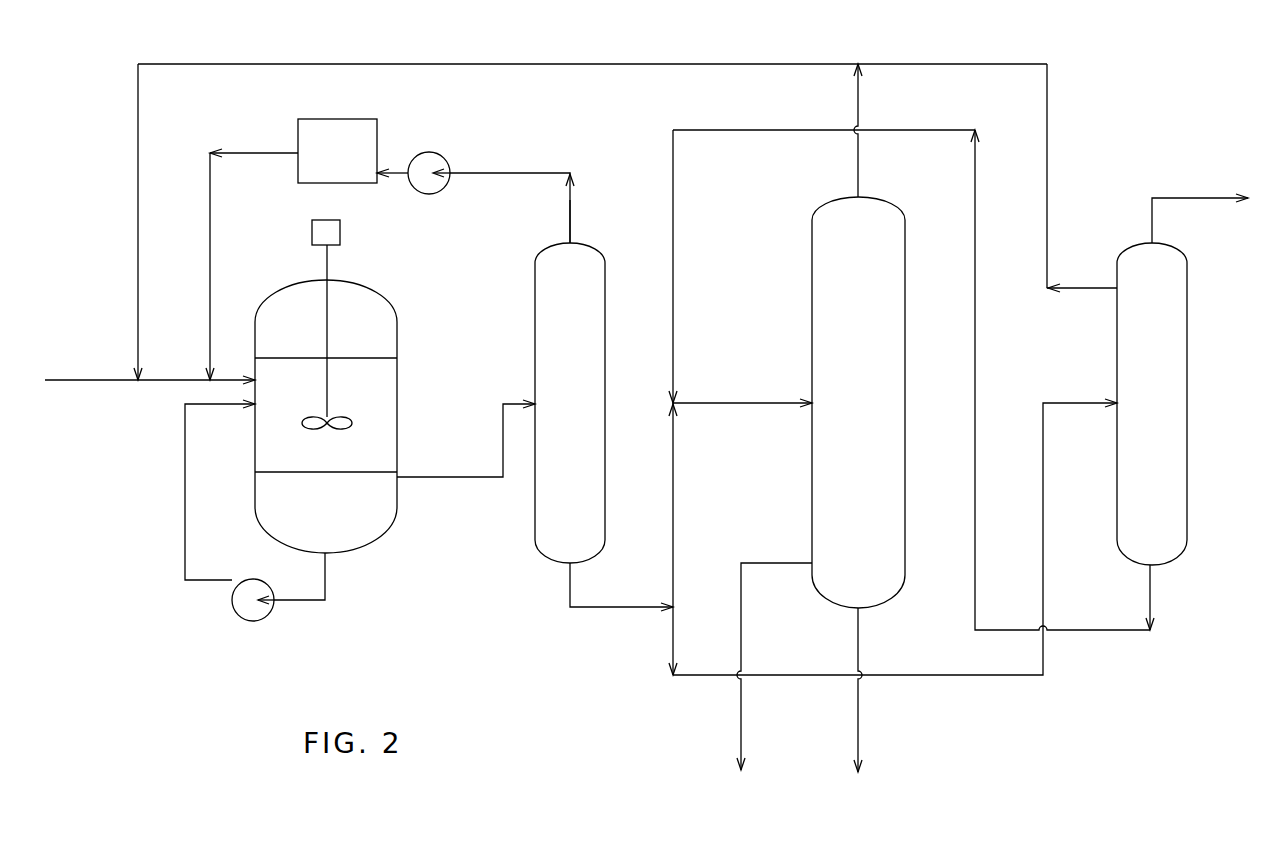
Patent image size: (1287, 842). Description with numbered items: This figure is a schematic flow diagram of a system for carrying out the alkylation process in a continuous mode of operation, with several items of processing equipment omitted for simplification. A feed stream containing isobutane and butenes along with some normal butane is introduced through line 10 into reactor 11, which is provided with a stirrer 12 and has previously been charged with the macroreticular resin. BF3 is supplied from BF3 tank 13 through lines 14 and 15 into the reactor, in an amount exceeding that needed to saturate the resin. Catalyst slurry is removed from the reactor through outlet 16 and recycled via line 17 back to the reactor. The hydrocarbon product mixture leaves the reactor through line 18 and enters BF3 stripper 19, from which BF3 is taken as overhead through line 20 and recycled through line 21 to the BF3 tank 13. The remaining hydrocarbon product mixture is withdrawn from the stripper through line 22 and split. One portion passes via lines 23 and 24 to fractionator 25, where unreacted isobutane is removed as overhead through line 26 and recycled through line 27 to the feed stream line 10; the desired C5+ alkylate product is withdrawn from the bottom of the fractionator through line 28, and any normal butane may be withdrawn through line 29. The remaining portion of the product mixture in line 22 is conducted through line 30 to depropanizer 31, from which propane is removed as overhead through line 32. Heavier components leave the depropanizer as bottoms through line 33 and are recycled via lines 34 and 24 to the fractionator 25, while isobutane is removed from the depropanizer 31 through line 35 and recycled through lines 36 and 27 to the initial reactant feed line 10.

The line 10 is at (120, 386).
The reactor 11 is at (397, 310).
The stirrer 12 is at (330, 257).
The BF3 tank 13 is at (377, 122).
The line 14 is at (250, 150).
The line 15 is at (210, 268).
The outlet 16 is at (325, 580).
The line 17 is at (185, 550).
The line 18 is at (447, 490).
The BF3 stripper 19 is at (605, 335).
The line 20 is at (570, 210).
The line 21 is at (535, 173).
The line 22 is at (568, 583).
The line 23 is at (673, 505).
The line 24 is at (735, 410).
The fractionator 25 is at (905, 348).
The line 26 is at (860, 95).
The line 27 is at (592, 63).
The line 28 is at (858, 722).
The line 29 is at (741, 620).
The line 30 is at (673, 645).
The depropanizer 31 is at (1187, 418).
The line 32 is at (1152, 220).
The line 33 is at (1150, 595).
The line 34 is at (975, 450).
The line 35 is at (1080, 294).
The line 36 is at (993, 63).